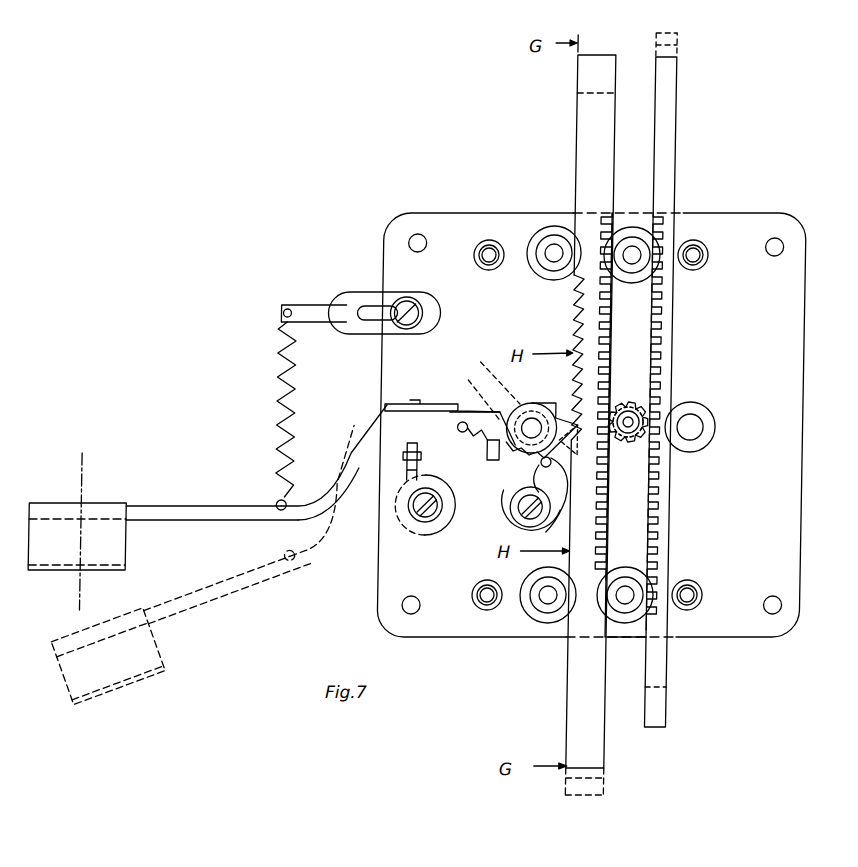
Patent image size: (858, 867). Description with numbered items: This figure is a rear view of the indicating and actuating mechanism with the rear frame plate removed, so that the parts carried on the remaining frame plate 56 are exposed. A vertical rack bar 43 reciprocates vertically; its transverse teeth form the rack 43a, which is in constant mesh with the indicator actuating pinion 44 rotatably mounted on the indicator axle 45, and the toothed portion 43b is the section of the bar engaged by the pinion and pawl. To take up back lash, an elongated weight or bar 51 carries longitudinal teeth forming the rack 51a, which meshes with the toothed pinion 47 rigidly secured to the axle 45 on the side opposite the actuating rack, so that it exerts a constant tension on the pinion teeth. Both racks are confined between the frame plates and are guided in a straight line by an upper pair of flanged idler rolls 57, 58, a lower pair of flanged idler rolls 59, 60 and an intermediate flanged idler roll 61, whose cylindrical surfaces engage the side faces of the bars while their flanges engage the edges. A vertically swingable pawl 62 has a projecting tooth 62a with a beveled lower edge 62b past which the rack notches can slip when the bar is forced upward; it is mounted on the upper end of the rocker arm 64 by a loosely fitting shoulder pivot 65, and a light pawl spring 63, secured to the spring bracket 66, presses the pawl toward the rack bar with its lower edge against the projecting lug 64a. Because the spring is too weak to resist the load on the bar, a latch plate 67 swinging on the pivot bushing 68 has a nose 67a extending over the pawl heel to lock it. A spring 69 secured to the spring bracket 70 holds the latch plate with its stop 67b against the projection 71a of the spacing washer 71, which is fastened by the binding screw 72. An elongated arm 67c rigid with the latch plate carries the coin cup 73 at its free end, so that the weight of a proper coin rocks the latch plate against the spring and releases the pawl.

The rack bar 43 is at (571, 118).
The rack 43a is at (613, 303).
The ratchet teeth of rack 43b is at (571, 300).
The indicator actuating pinion 44 is at (632, 410).
The indicator axle 45 is at (637, 416).
The toothed pinion 47 is at (628, 422).
The elongated weight or bar 51 is at (663, 519).
The rack 51a is at (628, 421).
The frame plate 56 is at (806, 534).
The flanged idler roll 57 is at (551, 238).
The flanged idler roll 58 is at (640, 236).
The flanged idler roll 59 is at (548, 600).
The flanged idler roll 60 is at (629, 608).
The intermediate flanged idler roll 61 is at (716, 433).
The pawl 62 is at (468, 405).
The tooth 62a is at (568, 416).
The beveled lower edge 62b is at (580, 446).
The pawl spring 63 is at (520, 455).
The rocker arm 64 is at (512, 505).
The projecting lug 64a is at (492, 448).
The shoulder pivot 65 is at (526, 420).
The spring bracket 66 is at (562, 518).
The latch plate 67 is at (362, 441).
The nose 67a is at (447, 404).
The stop 67b is at (413, 463).
The elongated arm 67c is at (276, 514).
The latch plate pivot bushing 68 is at (428, 528).
The spring 69 is at (281, 388).
The spring bracket 70 is at (325, 305).
The spacing washer 71 is at (438, 520).
The projection 71a is at (420, 468).
The binding screw 72 is at (440, 518).
The coin cup 73 is at (120, 549).